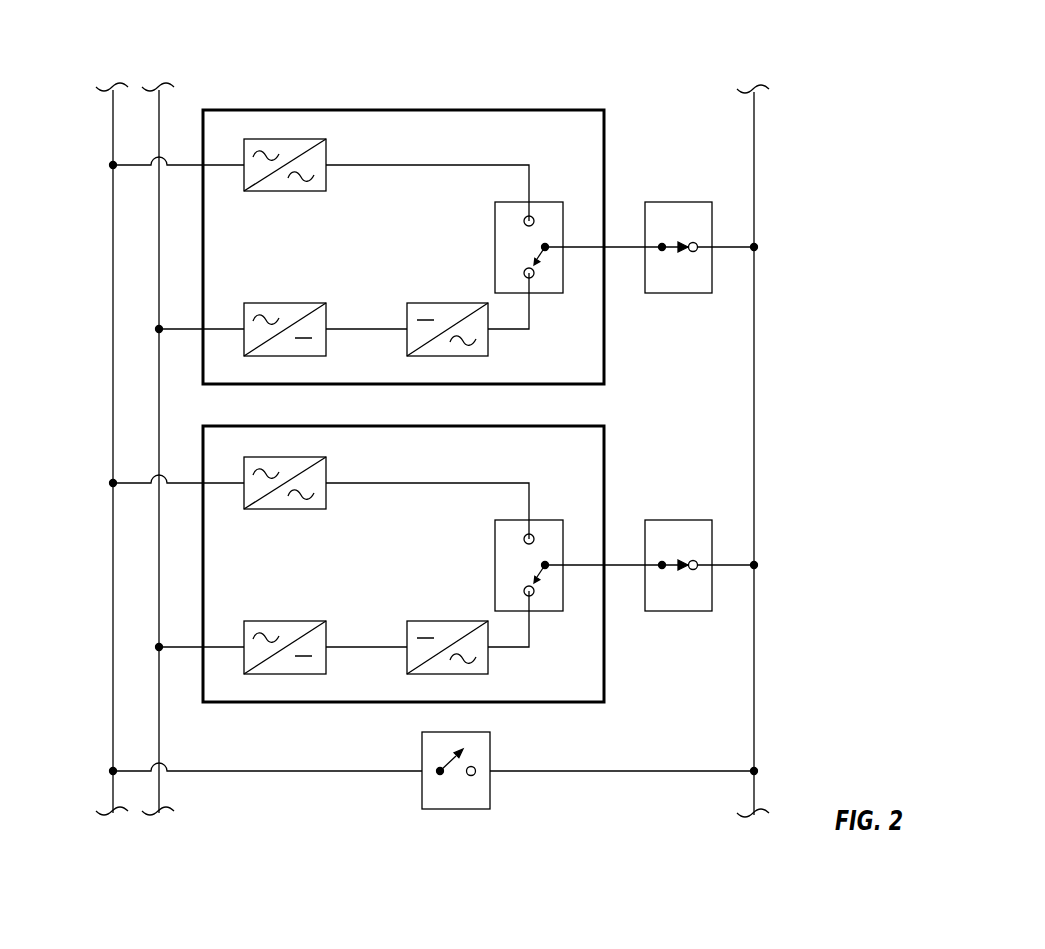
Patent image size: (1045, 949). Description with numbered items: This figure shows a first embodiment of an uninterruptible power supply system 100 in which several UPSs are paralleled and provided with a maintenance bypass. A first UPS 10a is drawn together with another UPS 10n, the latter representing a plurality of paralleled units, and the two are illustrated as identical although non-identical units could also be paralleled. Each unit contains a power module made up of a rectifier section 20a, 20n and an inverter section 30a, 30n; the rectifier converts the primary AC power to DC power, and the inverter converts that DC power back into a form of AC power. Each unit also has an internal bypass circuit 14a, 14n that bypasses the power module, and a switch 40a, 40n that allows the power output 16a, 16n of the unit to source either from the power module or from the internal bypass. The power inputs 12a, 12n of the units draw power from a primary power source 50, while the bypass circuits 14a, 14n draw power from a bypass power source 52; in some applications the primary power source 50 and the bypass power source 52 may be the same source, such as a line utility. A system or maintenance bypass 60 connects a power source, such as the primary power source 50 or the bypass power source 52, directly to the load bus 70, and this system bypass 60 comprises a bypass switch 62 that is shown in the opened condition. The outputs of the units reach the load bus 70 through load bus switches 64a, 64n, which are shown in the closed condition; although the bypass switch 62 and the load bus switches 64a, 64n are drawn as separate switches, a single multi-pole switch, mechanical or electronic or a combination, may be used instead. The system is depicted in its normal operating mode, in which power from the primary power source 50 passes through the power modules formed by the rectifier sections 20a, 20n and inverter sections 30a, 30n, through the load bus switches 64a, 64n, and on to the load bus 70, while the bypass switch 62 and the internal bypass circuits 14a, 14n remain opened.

The uninterruptible power supply system 100 is at (178, 50).
The first UPS 10a is at (594, 96).
The UPS 10n is at (594, 414).
The power input 12a is at (165, 333).
The power input 12n is at (165, 651).
The bypass circuit 14a is at (507, 165).
The bypass circuit 14n is at (507, 483).
The power output 16a is at (615, 247).
The power output 16n is at (615, 565).
The rectifier section 20a is at (280, 303).
The rectifier section 20n is at (280, 621).
The inverter section 30a is at (443, 303).
The inverter section 30n is at (443, 621).
The switch 40a is at (495, 247).
The switch 40n is at (495, 565).
The primary power source 50 is at (160, 780).
The bypass power source 52 is at (113, 405).
The system bypass 60 is at (620, 772).
The bypass switch 62 is at (457, 810).
The load bus switch 64a is at (678, 202).
The load bus switch 64n is at (678, 520).
The load bus 70 is at (755, 405).